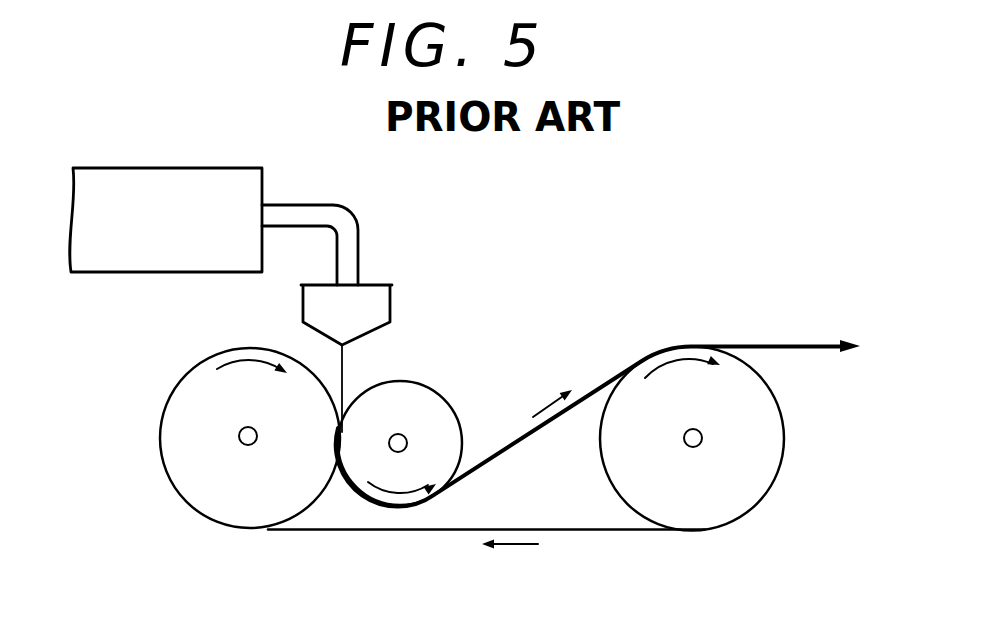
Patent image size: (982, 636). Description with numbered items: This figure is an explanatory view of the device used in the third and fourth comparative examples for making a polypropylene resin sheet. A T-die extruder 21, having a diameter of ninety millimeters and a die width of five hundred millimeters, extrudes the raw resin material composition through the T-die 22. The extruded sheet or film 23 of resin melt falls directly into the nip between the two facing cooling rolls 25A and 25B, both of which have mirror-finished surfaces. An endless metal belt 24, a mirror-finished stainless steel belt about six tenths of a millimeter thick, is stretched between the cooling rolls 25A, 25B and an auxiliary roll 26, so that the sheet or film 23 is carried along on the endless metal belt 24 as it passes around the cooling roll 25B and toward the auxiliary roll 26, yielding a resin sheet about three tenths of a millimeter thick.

The extruder 21 is at (262, 170).
The T-die 22 is at (390, 292).
The sheet or film 23 is at (342, 366).
The endless metal belt 24 is at (308, 531).
The cooling roll 25A is at (170, 463).
The cooling roll 25B is at (433, 383).
The auxiliary roll 26 is at (783, 444).